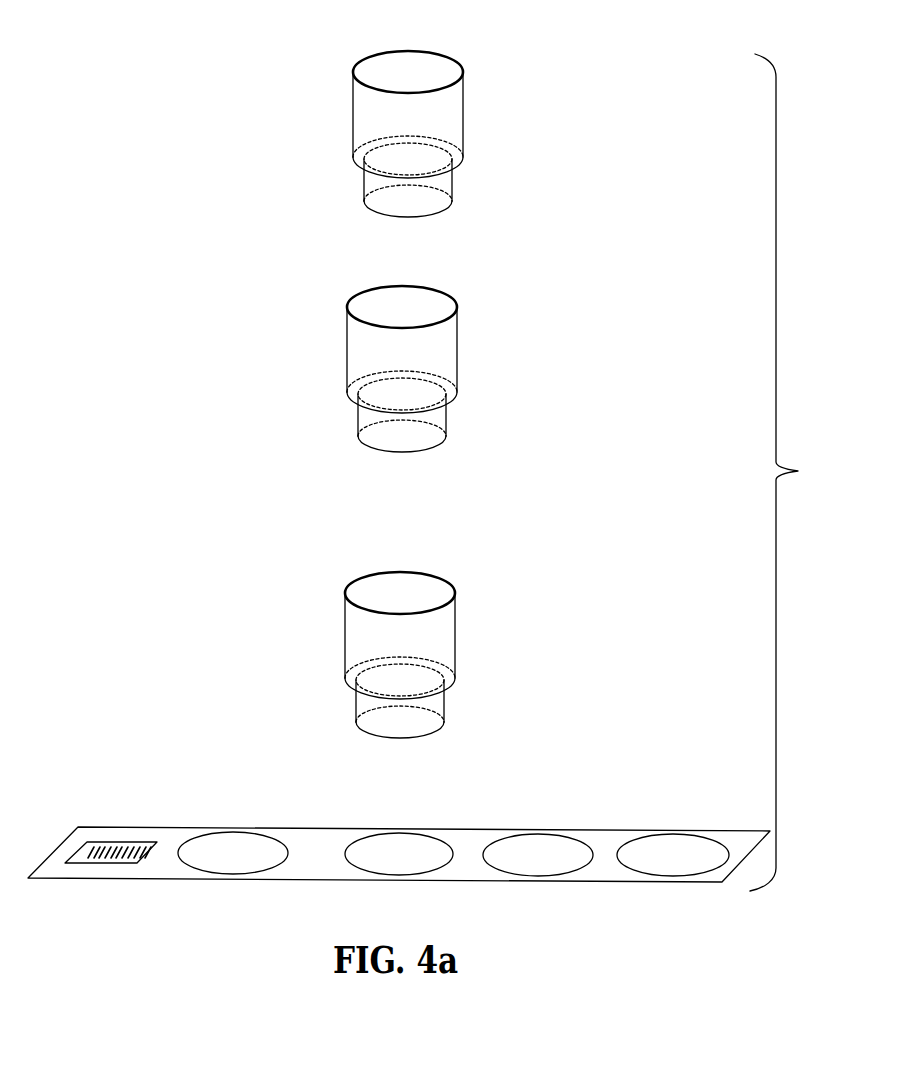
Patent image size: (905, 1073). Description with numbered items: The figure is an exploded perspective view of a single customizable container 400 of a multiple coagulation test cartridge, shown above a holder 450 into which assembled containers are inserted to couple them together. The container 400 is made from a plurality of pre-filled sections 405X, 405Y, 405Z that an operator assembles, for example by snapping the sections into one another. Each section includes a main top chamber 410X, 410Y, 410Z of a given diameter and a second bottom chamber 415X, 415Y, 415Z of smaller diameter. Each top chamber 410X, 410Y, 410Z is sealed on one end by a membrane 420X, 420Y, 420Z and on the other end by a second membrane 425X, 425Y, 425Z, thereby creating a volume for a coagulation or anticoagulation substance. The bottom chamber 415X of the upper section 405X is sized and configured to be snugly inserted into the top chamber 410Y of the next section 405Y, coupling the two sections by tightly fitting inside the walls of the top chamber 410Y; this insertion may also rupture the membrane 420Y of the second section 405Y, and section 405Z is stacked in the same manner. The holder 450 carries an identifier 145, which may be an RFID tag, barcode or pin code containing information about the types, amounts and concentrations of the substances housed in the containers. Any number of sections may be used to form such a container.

The customizable container 400 is at (223, 60).
The section 405X is at (490, 111).
The section 405Y is at (484, 346).
The section 405Z is at (482, 632).
The top chamber 410X is at (353, 107).
The top chamber 410Y is at (347, 342).
The top chamber 410Z is at (345, 628).
The bottom chamber 415X is at (363, 180).
The bottom chamber 415Y is at (357, 415).
The bottom chamber 415Z is at (355, 701).
The membrane 420X is at (420, 72).
The membrane 420Y is at (414, 307).
The membrane 420Z is at (412, 593).
The second membrane 425X is at (418, 157).
The second membrane 425Y is at (412, 392).
The second membrane 425Z is at (410, 678).
The holder 450 is at (468, 845).
The identifier 145 is at (102, 842).